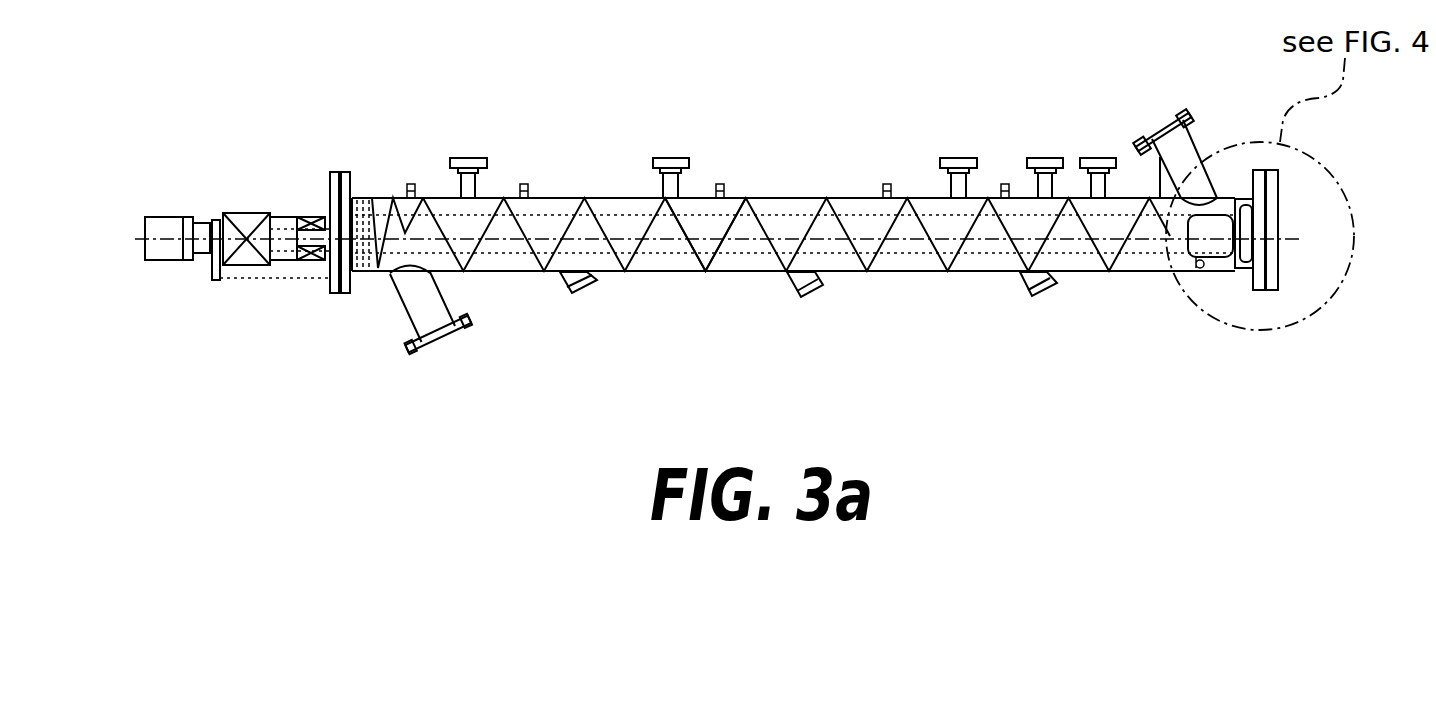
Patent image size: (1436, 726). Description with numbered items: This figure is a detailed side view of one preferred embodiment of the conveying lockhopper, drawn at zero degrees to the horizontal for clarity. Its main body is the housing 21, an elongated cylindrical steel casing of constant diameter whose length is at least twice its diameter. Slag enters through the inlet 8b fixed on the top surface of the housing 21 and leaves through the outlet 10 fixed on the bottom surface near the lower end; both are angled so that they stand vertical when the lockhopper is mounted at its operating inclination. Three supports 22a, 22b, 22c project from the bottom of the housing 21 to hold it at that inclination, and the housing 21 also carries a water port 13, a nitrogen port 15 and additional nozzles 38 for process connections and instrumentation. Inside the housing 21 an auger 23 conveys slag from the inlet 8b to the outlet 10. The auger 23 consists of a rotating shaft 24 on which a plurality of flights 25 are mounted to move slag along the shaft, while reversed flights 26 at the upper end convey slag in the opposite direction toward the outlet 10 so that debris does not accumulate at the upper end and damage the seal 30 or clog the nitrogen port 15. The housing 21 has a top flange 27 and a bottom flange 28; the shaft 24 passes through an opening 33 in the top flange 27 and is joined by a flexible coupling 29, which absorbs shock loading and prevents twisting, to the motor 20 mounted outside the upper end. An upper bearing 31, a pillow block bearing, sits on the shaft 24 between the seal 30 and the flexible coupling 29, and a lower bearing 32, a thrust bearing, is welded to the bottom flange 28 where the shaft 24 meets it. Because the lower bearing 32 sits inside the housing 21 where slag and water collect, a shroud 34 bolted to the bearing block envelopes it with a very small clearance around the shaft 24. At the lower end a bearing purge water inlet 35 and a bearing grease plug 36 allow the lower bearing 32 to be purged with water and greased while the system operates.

The motor 20 is at (158, 215).
The flexible coupling 29 is at (240, 213).
The upper bearing 31 is at (282, 215).
The seal 30 is at (310, 260).
The opening 33 is at (330, 250).
The top flange 27 is at (341, 293).
The reversed flights 26 is at (408, 163).
The housing 21 is at (603, 197).
The flights 25 is at (647, 244).
The shaft 24 is at (763, 233).
The auger 23 is at (696, 262).
The nitrogen port 15 is at (465, 158).
The nozzles 38 is at (670, 157).
The water port 13 is at (961, 158).
The inlet 8b is at (1142, 140).
The outlet 10 is at (468, 324).
The support 22a is at (583, 300).
The support 22b is at (808, 296).
The support 22c is at (1030, 297).
The shroud 34 is at (1230, 267).
The lower bearing 32 is at (1248, 272).
The bottom flange 28 is at (1265, 170).
The bearing purge water inlet 35 is at (1278, 262).
The bearing grease plug 36 is at (1280, 205).